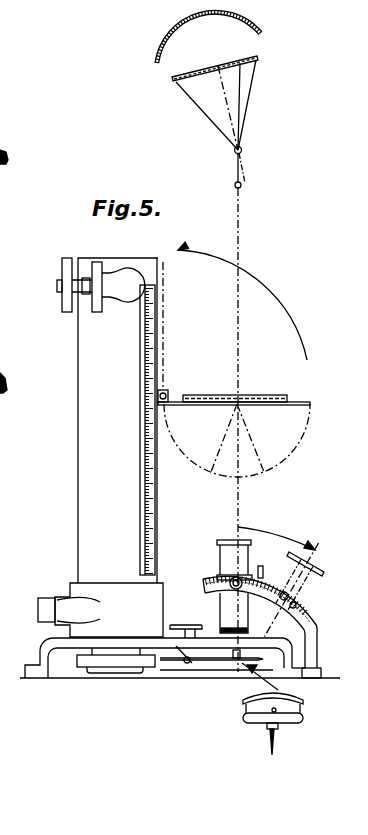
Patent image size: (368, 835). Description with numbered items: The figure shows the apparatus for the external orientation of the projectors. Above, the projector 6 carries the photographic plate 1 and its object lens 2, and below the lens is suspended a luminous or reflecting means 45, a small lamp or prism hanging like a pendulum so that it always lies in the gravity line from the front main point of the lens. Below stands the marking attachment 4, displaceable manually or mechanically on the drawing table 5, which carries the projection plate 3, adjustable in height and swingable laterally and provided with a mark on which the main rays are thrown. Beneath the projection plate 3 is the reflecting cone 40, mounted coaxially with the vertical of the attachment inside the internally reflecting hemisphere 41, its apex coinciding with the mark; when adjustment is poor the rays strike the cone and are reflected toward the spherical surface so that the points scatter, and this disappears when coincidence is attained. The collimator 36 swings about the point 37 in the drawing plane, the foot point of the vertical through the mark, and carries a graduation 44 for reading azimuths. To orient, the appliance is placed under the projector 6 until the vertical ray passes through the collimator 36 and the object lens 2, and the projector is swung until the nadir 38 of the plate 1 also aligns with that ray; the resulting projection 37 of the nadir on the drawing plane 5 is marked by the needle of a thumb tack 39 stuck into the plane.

The photographic plate 1 is at (177, 85).
The object lens 2 is at (242, 150).
The projection plate 3 is at (255, 400).
The marking attachment 4 is at (90, 435).
The drawing table 5 is at (75, 677).
The projector 6 is at (264, 33).
The collimator 36 is at (242, 555).
The swing point 37 is at (238, 676).
The nadir 38 is at (242, 65).
The thumb tack 39 is at (290, 711).
The reflecting cone 40 is at (222, 468).
The hemisphere 41 is at (293, 445).
The graduation 44 is at (305, 610).
The luminous or reflecting means 45 is at (242, 185).